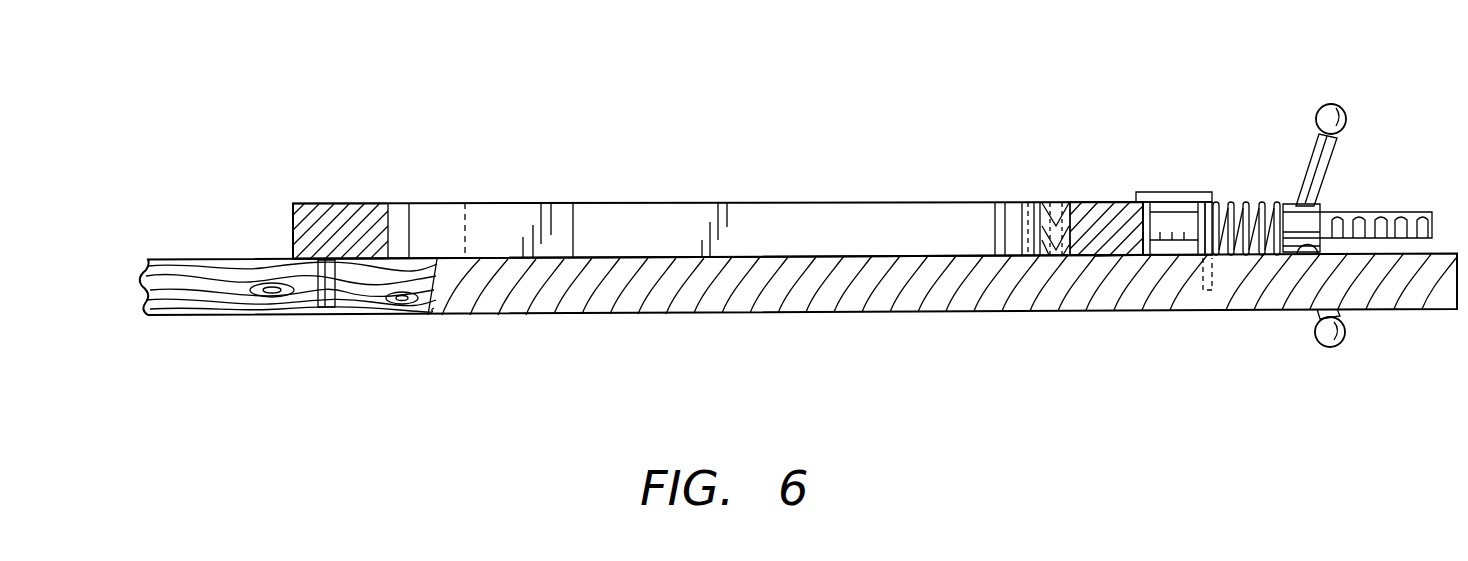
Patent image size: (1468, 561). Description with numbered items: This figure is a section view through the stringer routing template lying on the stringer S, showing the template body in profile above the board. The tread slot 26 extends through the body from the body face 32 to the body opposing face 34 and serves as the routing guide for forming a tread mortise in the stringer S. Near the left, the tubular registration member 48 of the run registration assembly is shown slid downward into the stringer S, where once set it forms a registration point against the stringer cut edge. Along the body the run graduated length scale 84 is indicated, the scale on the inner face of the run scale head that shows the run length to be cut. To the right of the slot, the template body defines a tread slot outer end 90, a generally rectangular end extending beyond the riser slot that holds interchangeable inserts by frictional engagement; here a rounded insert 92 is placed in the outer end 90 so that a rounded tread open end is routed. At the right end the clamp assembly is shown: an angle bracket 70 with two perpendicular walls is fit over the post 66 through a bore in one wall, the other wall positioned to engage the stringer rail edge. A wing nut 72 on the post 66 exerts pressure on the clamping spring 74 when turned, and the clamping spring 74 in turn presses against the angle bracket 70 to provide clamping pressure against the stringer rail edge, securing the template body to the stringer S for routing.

The tread slot 26 is at (805, 218).
The body face 32 is at (355, 203).
The body opposing face 34 is at (1105, 255).
The tubular registration member 48 is at (288, 315).
The post 66 is at (1352, 212).
The angle bracket 70 is at (1190, 192).
The wing nut 72 is at (1341, 106).
The clamping spring 74 is at (1238, 255).
The run graduated length scale 84 is at (389, 183).
The tread slot outer end 90 is at (1053, 202).
The rounded insert 92 is at (1013, 202).
The stringer S is at (730, 312).